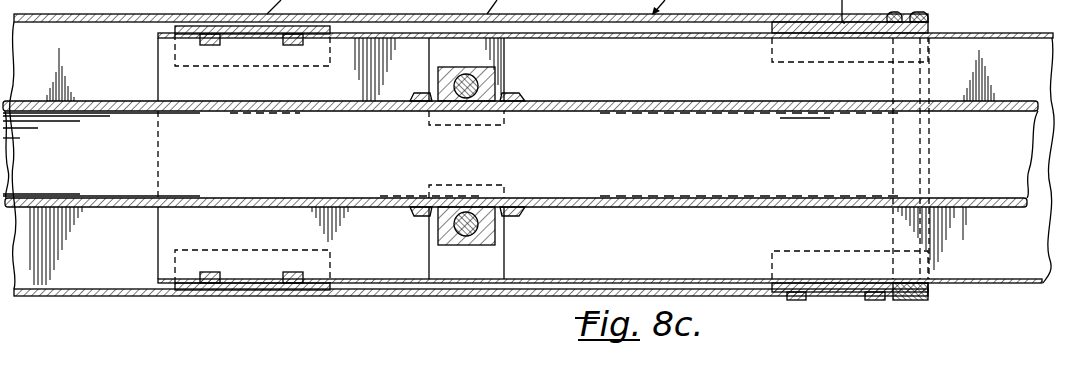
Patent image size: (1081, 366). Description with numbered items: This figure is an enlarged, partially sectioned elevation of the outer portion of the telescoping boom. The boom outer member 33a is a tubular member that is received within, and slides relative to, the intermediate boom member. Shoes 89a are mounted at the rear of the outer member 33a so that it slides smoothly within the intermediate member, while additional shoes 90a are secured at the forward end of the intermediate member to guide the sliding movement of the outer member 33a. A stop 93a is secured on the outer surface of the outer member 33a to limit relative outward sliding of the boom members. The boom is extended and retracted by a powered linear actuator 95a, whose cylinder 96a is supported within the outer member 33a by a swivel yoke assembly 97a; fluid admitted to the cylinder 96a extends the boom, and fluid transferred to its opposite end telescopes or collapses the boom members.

The boom outer member 33a is at (997, 33).
The shoes 89a is at (209, 290).
The shoes 90a is at (841, 298).
The stop 93a is at (757, 297).
The powered linear actuator 95a is at (683, 100).
The cylinder 96a is at (590, 101).
The swivel yoke assembly 97a is at (499, 82).